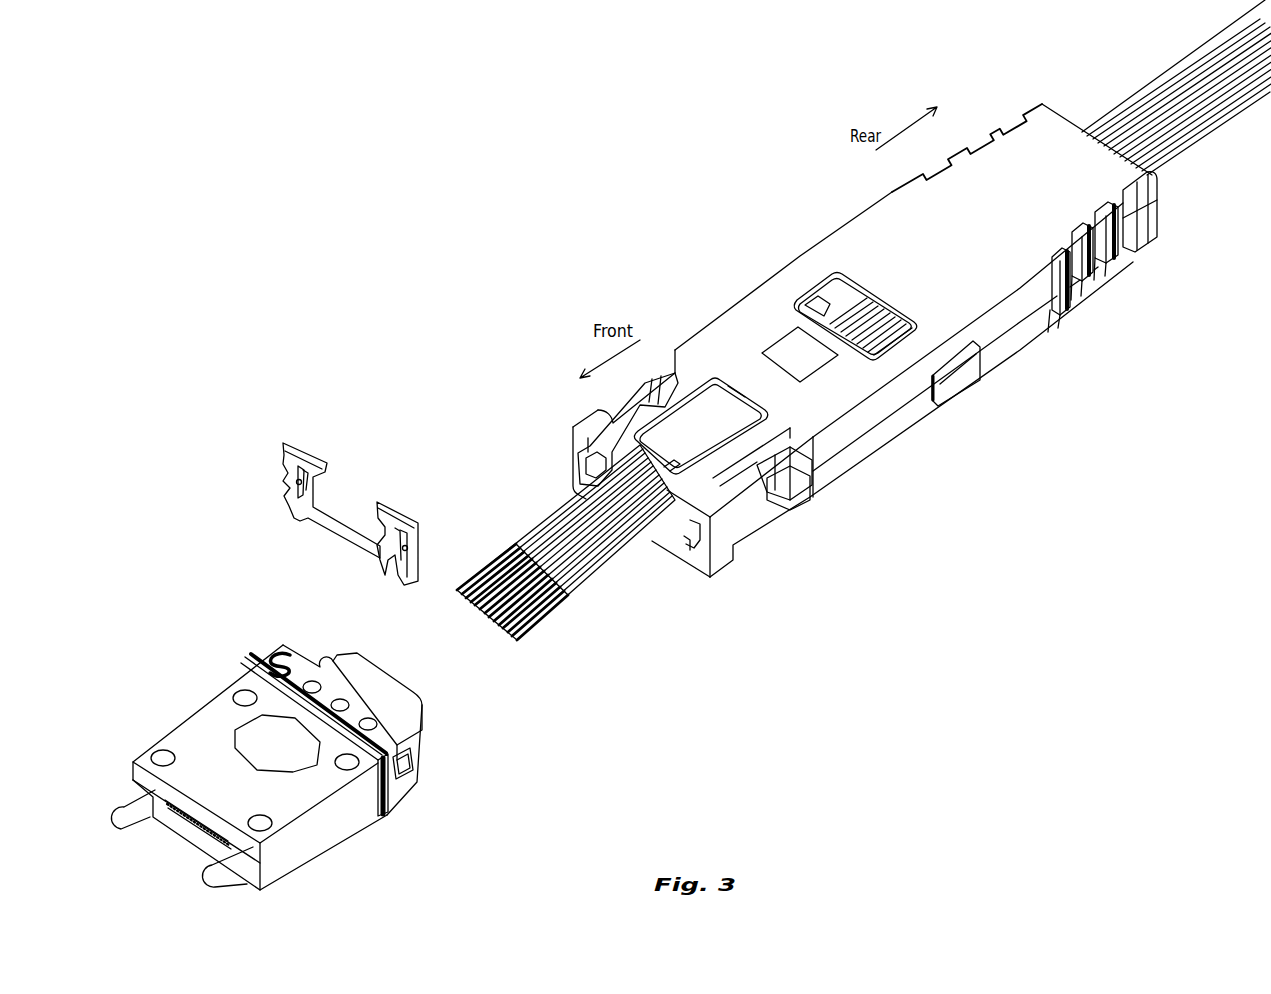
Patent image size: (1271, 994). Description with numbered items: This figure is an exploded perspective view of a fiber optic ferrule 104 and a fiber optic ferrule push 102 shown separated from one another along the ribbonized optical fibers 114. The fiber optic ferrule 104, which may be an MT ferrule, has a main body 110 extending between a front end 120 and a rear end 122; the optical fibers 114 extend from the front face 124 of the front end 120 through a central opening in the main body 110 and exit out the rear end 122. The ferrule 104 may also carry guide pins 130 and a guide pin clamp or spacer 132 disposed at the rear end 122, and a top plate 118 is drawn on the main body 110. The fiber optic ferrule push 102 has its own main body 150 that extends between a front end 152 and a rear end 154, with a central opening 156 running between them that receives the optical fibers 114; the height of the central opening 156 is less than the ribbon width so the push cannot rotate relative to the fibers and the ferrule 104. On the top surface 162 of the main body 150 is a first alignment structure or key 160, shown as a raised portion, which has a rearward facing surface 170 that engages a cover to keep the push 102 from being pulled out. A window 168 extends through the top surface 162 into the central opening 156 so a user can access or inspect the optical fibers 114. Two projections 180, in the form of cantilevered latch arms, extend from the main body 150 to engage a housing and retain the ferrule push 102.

The fiber optic ferrule push 102 is at (1010, 396).
The fiber optic ferrule 104 is at (365, 857).
The main body 110 is at (323, 830).
The optical fibers 114 is at (600, 583).
The top plate 118 is at (182, 742).
The front end 120 is at (253, 887).
The rear end 122 is at (415, 777).
The front face 124 is at (180, 827).
The guide pins 130 is at (120, 828).
The guide pin clamp or spacer 132 is at (282, 449).
The main body 150 is at (1062, 130).
The front end 152 is at (703, 568).
The rear end 154 is at (1158, 206).
The central opening 156 is at (823, 303).
The first alignment structure or key 160 is at (710, 432).
The top surface 162 is at (877, 376).
The window 168 is at (897, 298).
The rearward facing surface 170 is at (737, 380).
The projection or latch 180 is at (648, 377).